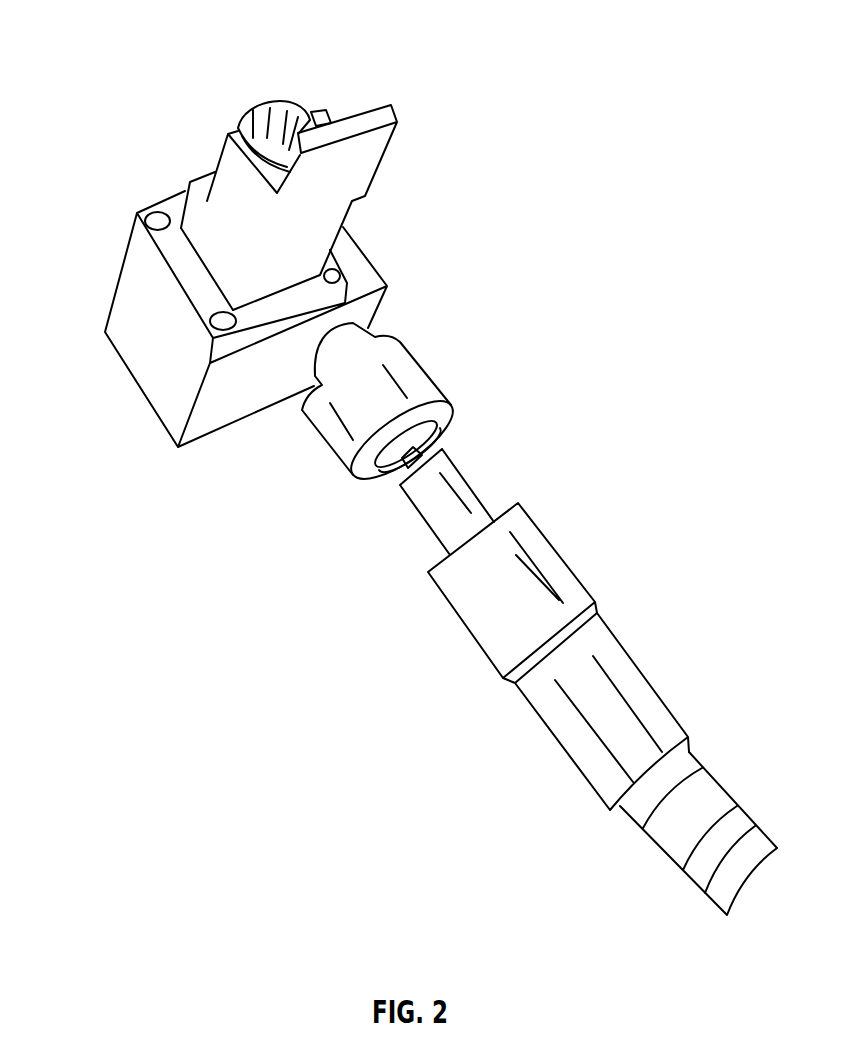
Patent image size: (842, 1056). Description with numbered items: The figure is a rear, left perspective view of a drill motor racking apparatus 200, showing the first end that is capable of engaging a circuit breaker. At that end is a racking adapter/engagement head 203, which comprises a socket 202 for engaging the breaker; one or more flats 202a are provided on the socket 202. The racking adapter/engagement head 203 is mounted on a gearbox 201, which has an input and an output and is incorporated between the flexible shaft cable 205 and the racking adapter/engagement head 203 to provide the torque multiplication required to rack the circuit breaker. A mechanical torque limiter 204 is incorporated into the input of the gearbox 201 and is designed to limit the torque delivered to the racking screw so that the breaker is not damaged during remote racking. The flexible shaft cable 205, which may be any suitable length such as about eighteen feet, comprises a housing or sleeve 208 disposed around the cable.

The drill motor racking apparatus 200 is at (157, 693).
The gearbox 201 is at (145, 386).
The socket 202 is at (234, 116).
The flats 202a is at (307, 101).
The racking adapter/engagement head 203 is at (183, 190).
The torque limiter 204 is at (316, 449).
The flexible shaft cable 205 is at (667, 865).
The housing or sleeve 208 is at (488, 693).